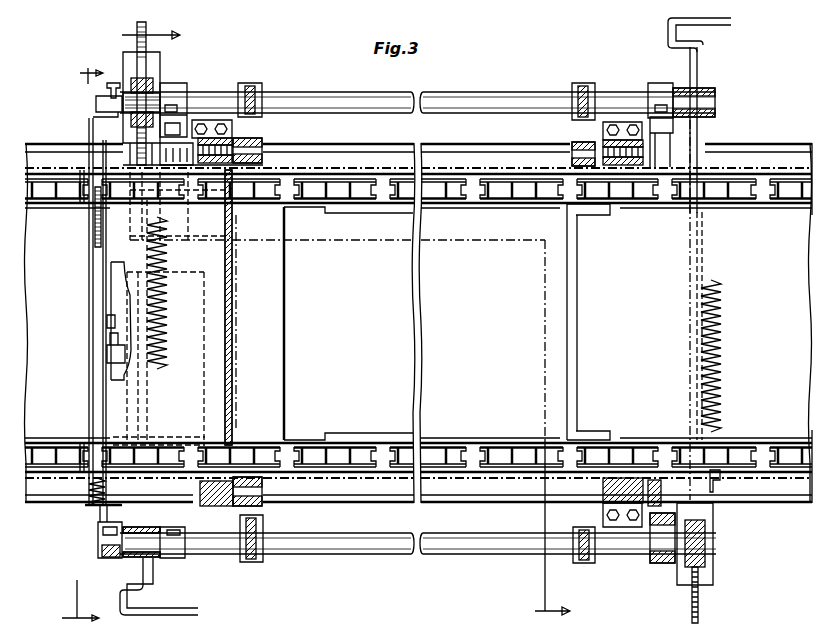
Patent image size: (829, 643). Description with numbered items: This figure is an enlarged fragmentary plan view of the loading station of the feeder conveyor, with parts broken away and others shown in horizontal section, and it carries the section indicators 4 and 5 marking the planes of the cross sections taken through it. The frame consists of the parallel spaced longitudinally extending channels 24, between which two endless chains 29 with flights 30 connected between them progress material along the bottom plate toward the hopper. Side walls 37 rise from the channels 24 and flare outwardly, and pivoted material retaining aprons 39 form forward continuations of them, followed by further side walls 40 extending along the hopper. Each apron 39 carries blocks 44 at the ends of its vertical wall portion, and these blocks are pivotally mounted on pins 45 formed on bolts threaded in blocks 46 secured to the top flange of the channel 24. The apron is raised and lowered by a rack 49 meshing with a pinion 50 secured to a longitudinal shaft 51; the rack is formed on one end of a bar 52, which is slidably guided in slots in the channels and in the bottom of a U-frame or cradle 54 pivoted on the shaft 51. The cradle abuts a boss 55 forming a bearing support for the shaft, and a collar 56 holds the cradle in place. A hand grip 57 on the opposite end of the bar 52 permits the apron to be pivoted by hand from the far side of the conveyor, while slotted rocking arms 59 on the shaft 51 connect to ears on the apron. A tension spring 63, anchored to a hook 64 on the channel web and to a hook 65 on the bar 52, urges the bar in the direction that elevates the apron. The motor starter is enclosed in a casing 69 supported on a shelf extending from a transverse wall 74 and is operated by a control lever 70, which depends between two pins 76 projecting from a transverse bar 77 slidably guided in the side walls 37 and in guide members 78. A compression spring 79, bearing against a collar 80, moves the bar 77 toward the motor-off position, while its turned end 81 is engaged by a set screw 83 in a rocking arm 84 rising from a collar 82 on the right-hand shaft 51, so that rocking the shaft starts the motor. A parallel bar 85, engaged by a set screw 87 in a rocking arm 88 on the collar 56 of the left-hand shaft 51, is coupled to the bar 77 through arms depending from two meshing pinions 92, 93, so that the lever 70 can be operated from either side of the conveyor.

The section line 4- 4 is at (356, 323).
The section line 5- 5 is at (87, 340).
The channels 24 is at (758, 152).
The endless chains 29 is at (491, 448).
The flights 30 is at (287, 312).
The side walls 37 is at (50, 167).
The pivoted material retaining aprons 39 is at (314, 170).
The side walls 40 is at (780, 167).
The blocks 44 is at (263, 140).
The pins 45 is at (263, 152).
The blocks 46 is at (217, 120).
The rack 49 is at (137, 30).
The pinion 50 is at (147, 80).
The longitudinal shaft 51 is at (385, 98).
The bar 52 is at (698, 136).
The U-frame or cradle 54 is at (162, 70).
The boss 55 is at (185, 83).
The collar 56 is at (118, 80).
The hand grip 57 is at (720, 23).
The slotted rocking arms 59 is at (265, 565).
The tension spring 63 is at (168, 322).
The hook 64 is at (170, 235).
The hook 65 is at (155, 370).
The casing 69 is at (213, 365).
The control lever 70 is at (107, 342).
The transverse wall 74 is at (280, 274).
The pins 76 is at (107, 318).
The transverse bar 77 is at (103, 397).
The guide members 78 is at (84, 195).
The compression spring 79 is at (80, 508).
The collar 80 is at (92, 505).
The end 81 is at (98, 535).
The collar 82 is at (110, 537).
The set screw 83 is at (120, 558).
The rocking arm 84 is at (88, 580).
The bar 85 is at (90, 268).
The set screw 87 is at (98, 102).
The rocking arm 88 is at (103, 92).
The pinion 92 is at (101, 218).
The pinion 93 is at (95, 250).